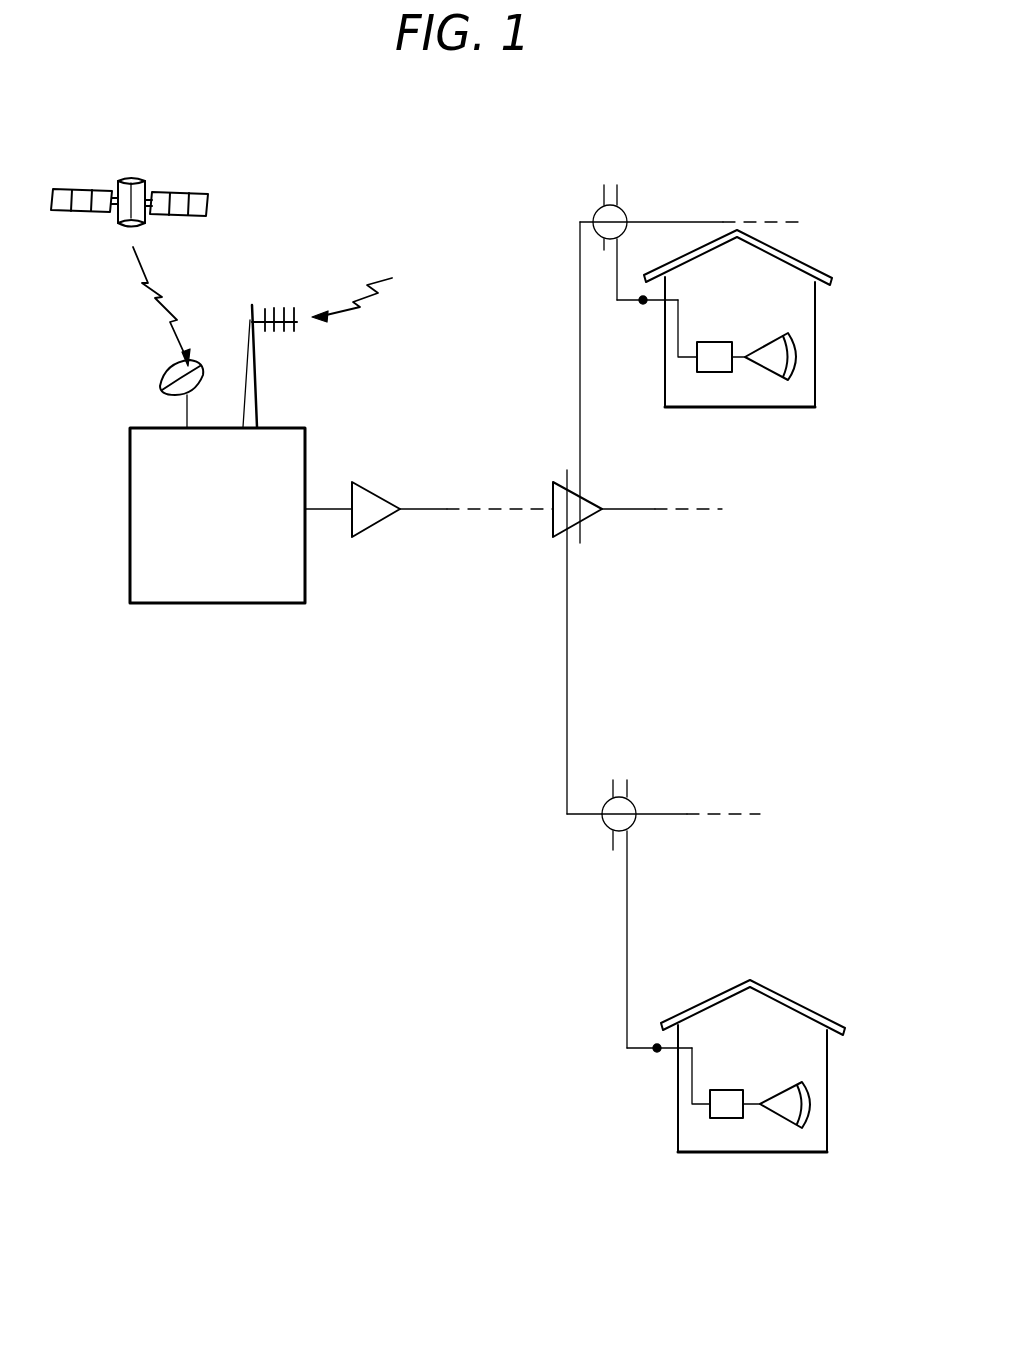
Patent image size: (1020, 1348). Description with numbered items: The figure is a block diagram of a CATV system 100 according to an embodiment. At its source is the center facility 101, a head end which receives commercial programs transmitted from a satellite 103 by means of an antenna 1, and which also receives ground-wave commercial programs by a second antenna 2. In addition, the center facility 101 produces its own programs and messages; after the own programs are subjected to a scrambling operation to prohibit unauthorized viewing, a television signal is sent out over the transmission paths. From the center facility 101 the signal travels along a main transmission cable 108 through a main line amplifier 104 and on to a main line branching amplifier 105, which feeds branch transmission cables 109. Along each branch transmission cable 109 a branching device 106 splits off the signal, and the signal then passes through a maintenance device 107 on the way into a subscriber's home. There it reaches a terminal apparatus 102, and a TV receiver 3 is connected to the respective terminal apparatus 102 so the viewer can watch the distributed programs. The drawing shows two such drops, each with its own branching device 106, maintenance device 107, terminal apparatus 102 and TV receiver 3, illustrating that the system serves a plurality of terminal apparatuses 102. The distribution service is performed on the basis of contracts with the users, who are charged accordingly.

The CATV system 100 is at (262, 995).
The center facility 101 is at (252, 603).
The terminal apparatus 102 is at (712, 373).
The satellite 103 is at (208, 203).
The main line amplifier 104 is at (375, 536).
The main line branching amplifier 105 is at (590, 497).
The branching device 106 is at (625, 212).
The maintenance device 107 is at (643, 305).
The main transmission cable 108 is at (330, 509).
The branch transmission cable 109 is at (579, 265).
The antenna 1 is at (158, 385).
The antenna 2 is at (282, 332).
The TV receiver 3 is at (775, 379).